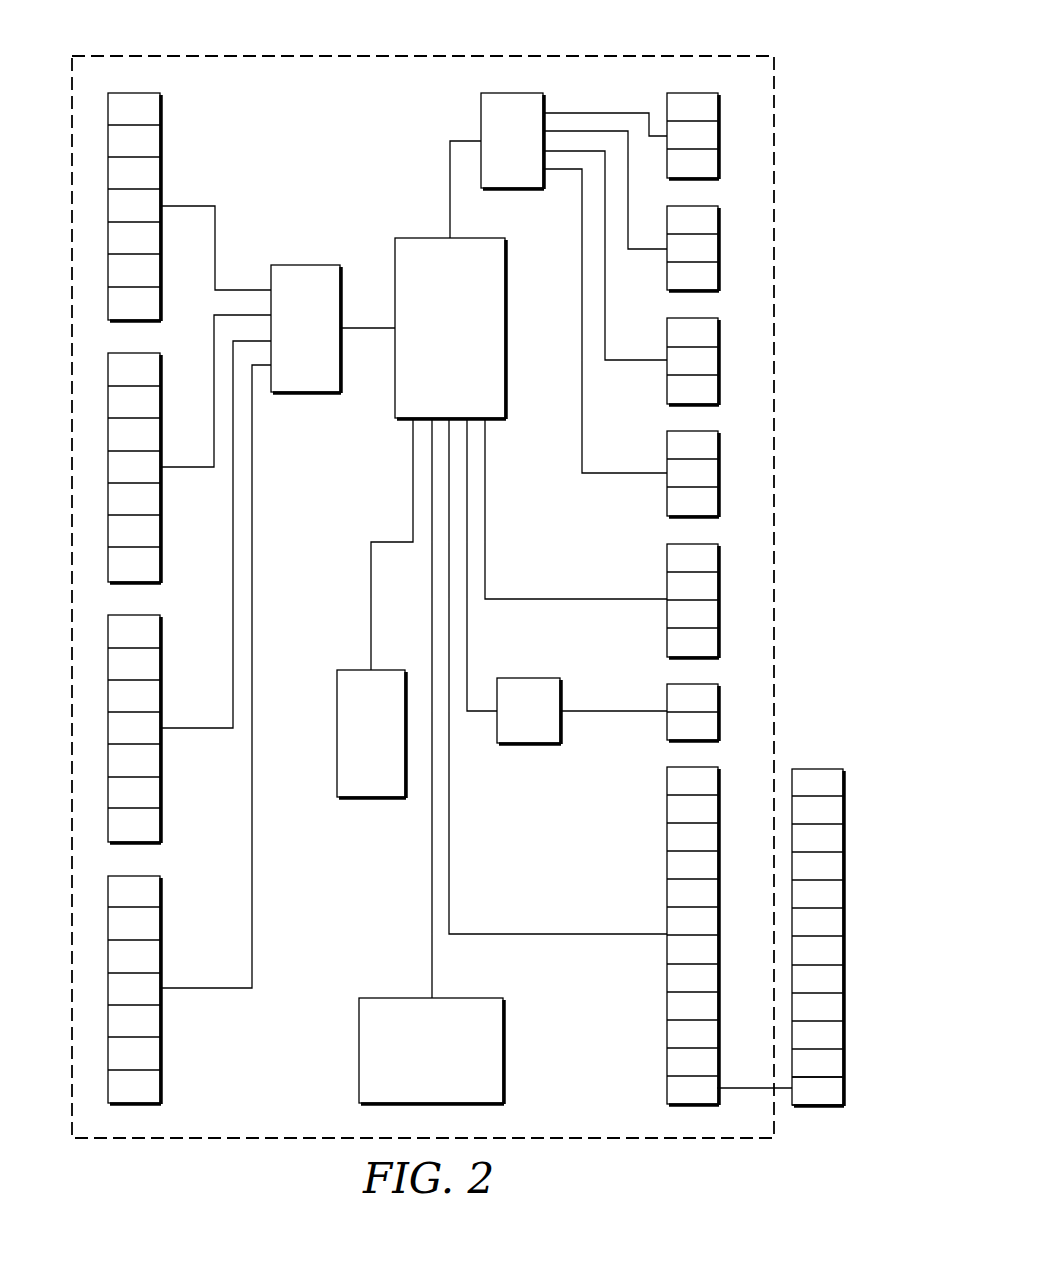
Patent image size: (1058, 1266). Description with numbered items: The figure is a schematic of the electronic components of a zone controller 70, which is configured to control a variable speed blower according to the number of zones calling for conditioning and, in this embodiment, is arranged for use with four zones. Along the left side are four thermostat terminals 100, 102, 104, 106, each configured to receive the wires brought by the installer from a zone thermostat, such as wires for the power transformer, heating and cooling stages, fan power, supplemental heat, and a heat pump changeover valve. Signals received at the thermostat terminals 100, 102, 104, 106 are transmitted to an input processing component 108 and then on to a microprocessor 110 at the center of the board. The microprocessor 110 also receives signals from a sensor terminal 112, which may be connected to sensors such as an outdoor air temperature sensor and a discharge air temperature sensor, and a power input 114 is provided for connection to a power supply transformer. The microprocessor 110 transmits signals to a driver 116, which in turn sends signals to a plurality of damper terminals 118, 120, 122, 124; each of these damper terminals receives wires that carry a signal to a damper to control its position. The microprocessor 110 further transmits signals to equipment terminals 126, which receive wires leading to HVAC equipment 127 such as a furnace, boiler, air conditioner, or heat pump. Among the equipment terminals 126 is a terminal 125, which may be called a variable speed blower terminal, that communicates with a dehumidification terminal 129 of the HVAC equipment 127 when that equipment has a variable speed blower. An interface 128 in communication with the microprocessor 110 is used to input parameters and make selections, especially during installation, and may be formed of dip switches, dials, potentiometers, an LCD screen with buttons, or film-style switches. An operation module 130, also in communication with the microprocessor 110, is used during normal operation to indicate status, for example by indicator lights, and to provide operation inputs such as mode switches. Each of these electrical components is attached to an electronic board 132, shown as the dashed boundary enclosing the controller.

The zone controller 70 is at (740, 38).
The thermostat terminal 100 is at (145, 93).
The thermostat terminal 102 is at (145, 353).
The thermostat terminal 104 is at (145, 615).
The thermostat terminal 106 is at (145, 876).
The input processing component 108 is at (325, 265).
The microprocessor 110 is at (488, 238).
The sensor terminal 112 is at (704, 544).
The power input 114 is at (704, 684).
The driver 116 is at (528, 93).
The damper terminal 118 is at (704, 93).
The damper terminal 120 is at (704, 206).
The damper terminal 122 is at (704, 318).
The damper terminal 124 is at (704, 431).
The variable speed blower terminal 125 is at (688, 1088).
The equipment terminals 126 is at (704, 767).
The HVAC equipment 127 is at (817, 780).
The interface 128 is at (488, 998).
The dehumidification terminal 129 is at (818, 1095).
The operation module 130 is at (385, 670).
The electronic board 132 is at (86, 1113).